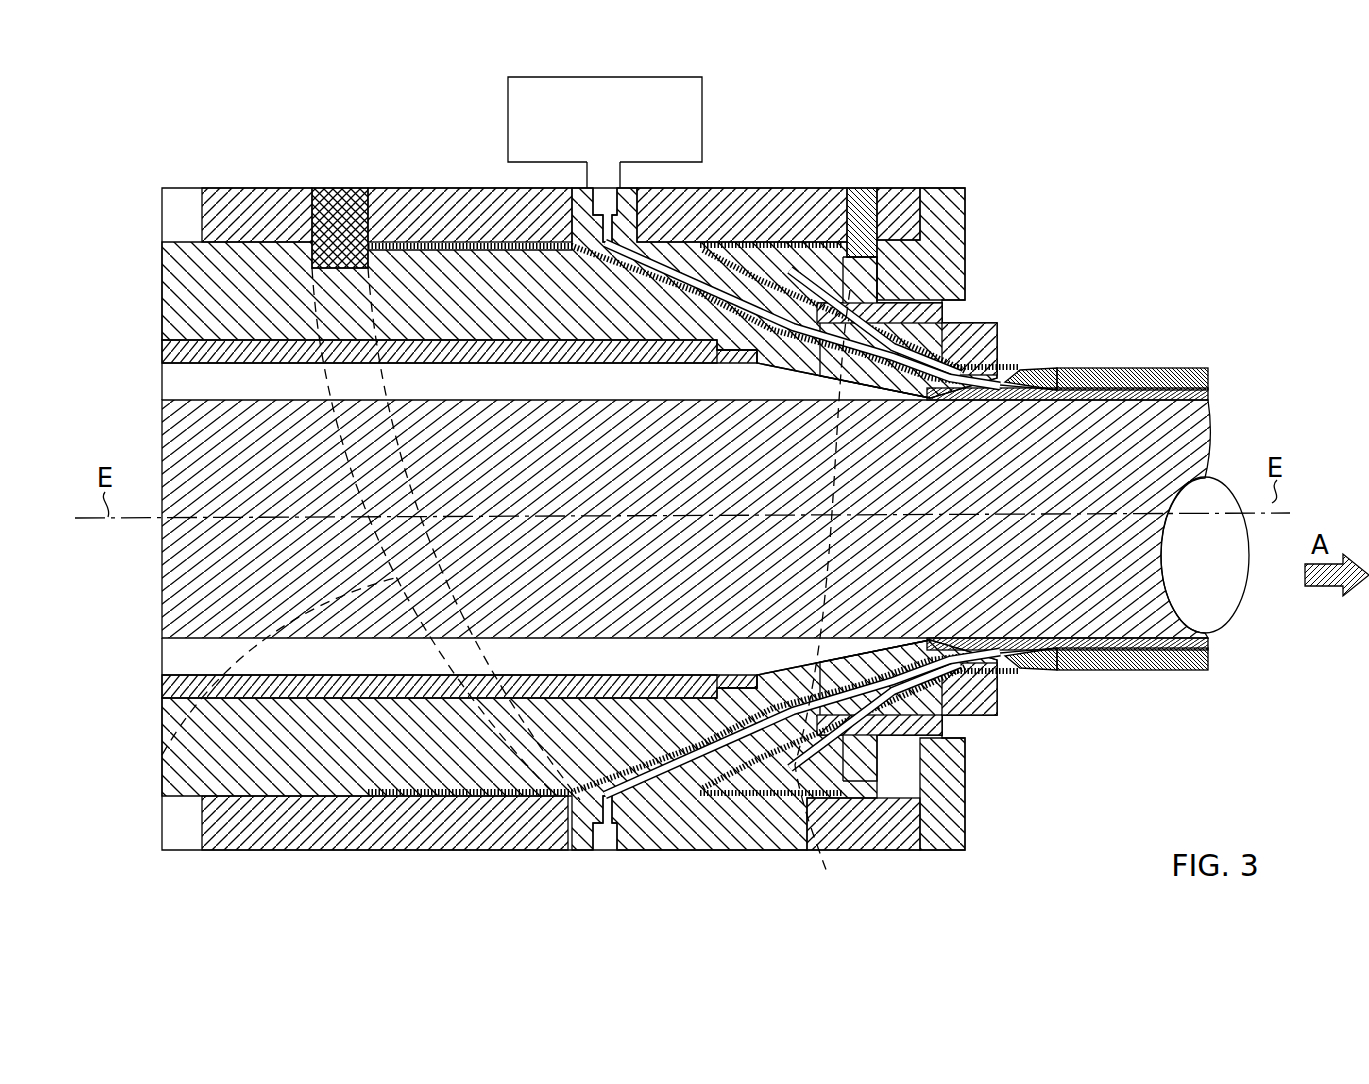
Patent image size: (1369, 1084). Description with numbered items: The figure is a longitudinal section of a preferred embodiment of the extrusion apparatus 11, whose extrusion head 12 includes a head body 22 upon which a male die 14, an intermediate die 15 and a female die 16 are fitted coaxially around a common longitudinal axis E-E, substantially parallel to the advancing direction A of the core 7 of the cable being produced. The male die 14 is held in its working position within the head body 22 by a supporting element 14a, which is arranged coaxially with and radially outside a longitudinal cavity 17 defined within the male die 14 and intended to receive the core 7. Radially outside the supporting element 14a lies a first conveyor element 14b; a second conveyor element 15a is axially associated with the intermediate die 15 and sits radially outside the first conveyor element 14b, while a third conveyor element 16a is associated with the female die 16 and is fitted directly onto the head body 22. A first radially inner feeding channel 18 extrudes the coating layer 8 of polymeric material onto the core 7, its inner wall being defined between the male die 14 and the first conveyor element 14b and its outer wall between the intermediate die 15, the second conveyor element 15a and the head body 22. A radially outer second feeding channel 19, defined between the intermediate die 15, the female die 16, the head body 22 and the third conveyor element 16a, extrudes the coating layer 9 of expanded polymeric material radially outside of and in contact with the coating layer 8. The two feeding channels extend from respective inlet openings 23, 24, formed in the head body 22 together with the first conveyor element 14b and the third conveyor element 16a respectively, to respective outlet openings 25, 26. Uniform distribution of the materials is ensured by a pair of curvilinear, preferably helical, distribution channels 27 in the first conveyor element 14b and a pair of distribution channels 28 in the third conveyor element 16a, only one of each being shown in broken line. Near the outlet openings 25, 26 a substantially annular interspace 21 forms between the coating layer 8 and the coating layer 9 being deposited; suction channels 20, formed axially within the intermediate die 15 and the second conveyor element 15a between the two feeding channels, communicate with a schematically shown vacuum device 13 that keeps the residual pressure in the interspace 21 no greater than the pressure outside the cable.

The core 7 is at (185, 548).
The coating layer of polymeric material 8 is at (1212, 395).
The coating layer of expanded polymeric material 9 is at (1165, 372).
The extrusion apparatus 11 is at (176, 152).
The extrusion head 12 is at (160, 245).
The device for forming the vacuum 13 is at (680, 95).
The male die 14 is at (962, 300).
The supporting element 14a is at (185, 348).
The first conveyor element 14b is at (185, 290).
The intermediate die 15 is at (880, 300).
The second conveyor element 15a is at (708, 205).
The female die 16 is at (1000, 335).
The third conveyor element 16a is at (975, 210).
The longitudinal cavity 17 is at (175, 383).
The first radially inner feeding channel 18 is at (470, 195).
The radially outer second feeding channel 19 is at (810, 200).
The suction channels 20 is at (755, 230).
The annular interspace 21 is at (1060, 372).
The head body 22 is at (430, 195).
The inlet opening 23 is at (340, 190).
The inlet opening 24 is at (868, 190).
The outlet opening 25 is at (975, 322).
The outlet opening 26 is at (1010, 365).
The distribution channels 27 is at (165, 745).
The distribution channels 28 is at (805, 850).